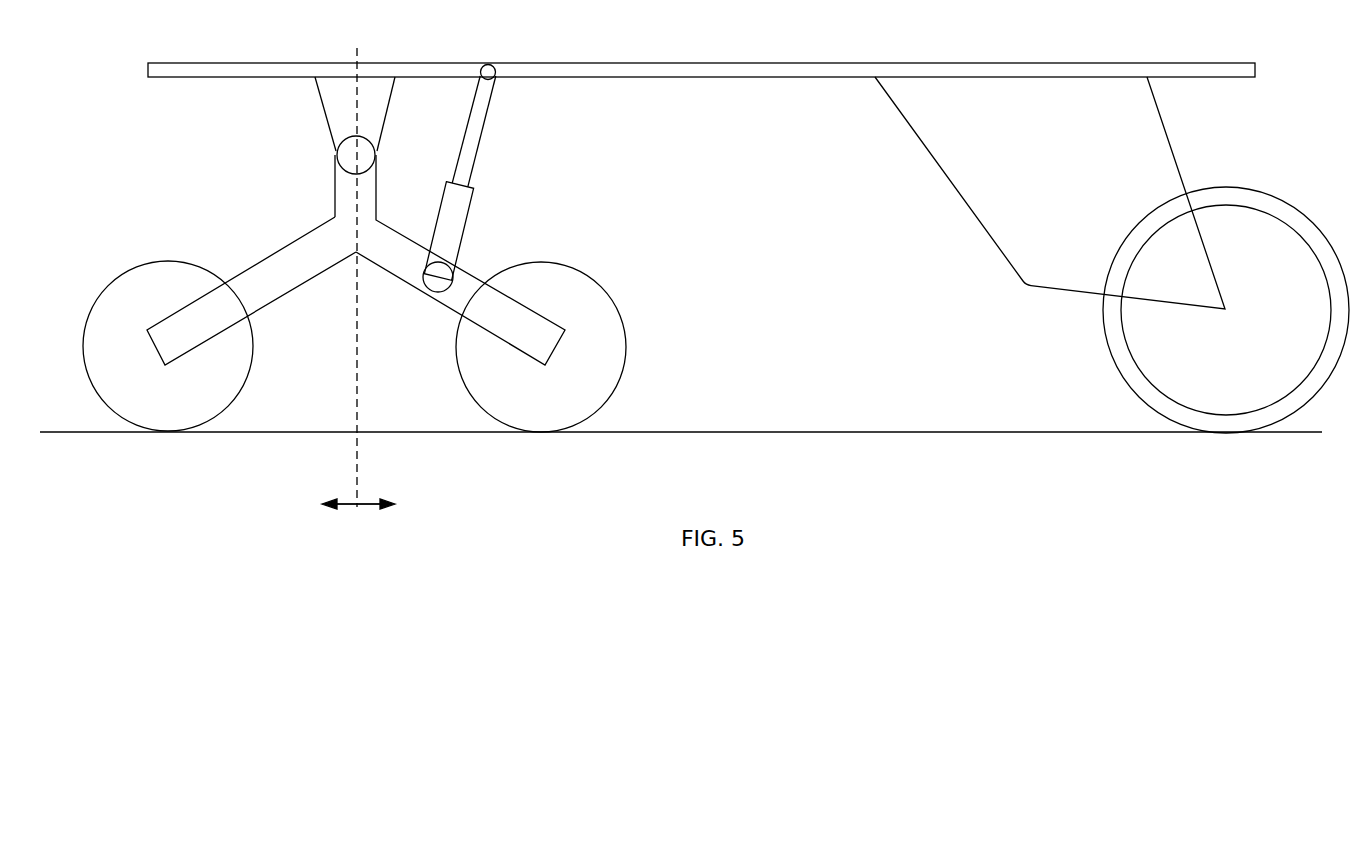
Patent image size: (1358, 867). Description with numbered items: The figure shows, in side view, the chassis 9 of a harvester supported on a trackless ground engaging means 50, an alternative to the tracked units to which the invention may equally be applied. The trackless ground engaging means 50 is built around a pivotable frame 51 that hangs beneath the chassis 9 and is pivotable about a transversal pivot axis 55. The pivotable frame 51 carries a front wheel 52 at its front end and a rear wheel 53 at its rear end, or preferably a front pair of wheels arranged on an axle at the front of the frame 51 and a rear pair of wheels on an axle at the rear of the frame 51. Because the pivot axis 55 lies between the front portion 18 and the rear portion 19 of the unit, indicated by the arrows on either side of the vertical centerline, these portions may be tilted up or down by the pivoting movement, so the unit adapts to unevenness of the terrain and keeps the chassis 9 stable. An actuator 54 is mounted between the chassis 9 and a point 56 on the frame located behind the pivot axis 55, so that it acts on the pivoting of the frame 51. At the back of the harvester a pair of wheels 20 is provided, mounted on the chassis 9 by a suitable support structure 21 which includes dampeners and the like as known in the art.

The chassis 9 is at (747, 67).
The front portion 18 is at (325, 491).
The rear portion 19 is at (387, 491).
The pair of wheels 20 is at (1197, 375).
The support structure 21 is at (1170, 167).
The trackless ground engaging means 50 is at (356, 240).
The pivotable frame 51 is at (293, 267).
The front wheel 52 is at (144, 287).
The rear wheel 53 is at (597, 308).
The actuator 54 is at (458, 220).
The pivot axis 55 is at (353, 156).
The point 56 is at (433, 278).